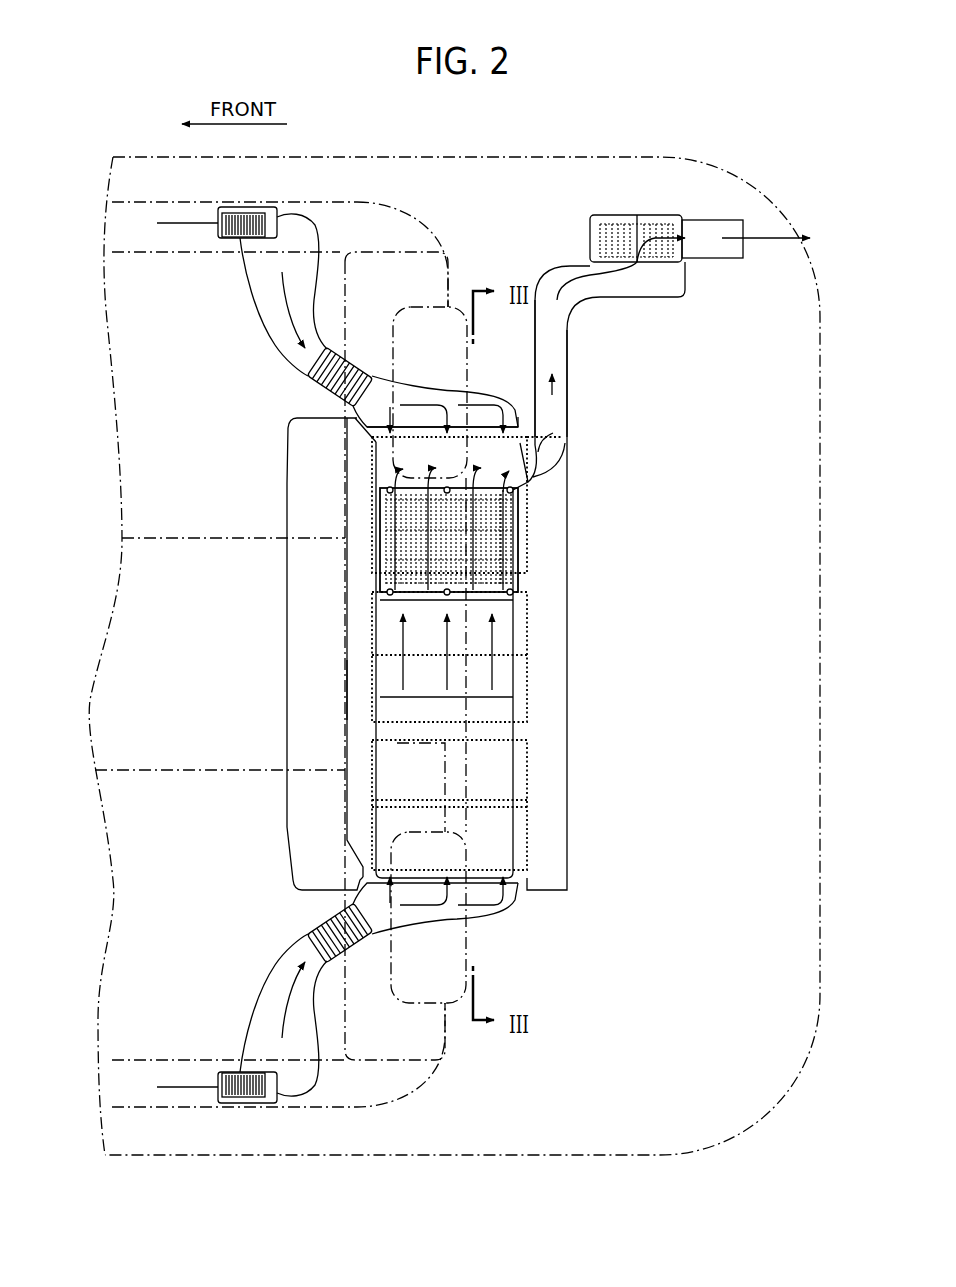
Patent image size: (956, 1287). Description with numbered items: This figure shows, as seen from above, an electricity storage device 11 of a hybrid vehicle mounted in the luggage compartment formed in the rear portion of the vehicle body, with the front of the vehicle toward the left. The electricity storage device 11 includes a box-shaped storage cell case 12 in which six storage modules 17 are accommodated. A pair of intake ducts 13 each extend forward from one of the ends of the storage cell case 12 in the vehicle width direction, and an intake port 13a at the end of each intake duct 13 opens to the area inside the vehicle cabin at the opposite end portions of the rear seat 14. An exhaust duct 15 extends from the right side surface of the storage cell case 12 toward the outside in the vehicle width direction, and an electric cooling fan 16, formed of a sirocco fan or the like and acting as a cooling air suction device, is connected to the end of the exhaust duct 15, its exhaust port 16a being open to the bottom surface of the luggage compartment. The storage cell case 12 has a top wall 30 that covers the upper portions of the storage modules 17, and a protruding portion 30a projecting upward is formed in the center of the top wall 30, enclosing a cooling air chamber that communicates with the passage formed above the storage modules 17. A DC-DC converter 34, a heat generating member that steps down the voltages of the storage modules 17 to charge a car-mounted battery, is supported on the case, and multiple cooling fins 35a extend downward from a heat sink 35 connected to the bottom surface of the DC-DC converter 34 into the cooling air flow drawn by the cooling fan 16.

The electricity storage device 11 is at (574, 608).
The storage cell case 12 is at (283, 704).
The intake duct 13 is at (259, 334).
The intake port 13a is at (224, 241).
The rear seat 14 is at (383, 204).
The exhaust duct 15 is at (565, 340).
The electric cooling fan 16 is at (612, 210).
The exhaust port 16a is at (748, 233).
The storage module 17 is at (530, 522).
The top wall 30 is at (343, 613).
The protruding portion 30a is at (338, 689).
The DC-DC converter 34 is at (375, 515).
The heat sink 35 is at (383, 553).
The cooling fin 35a is at (500, 556).